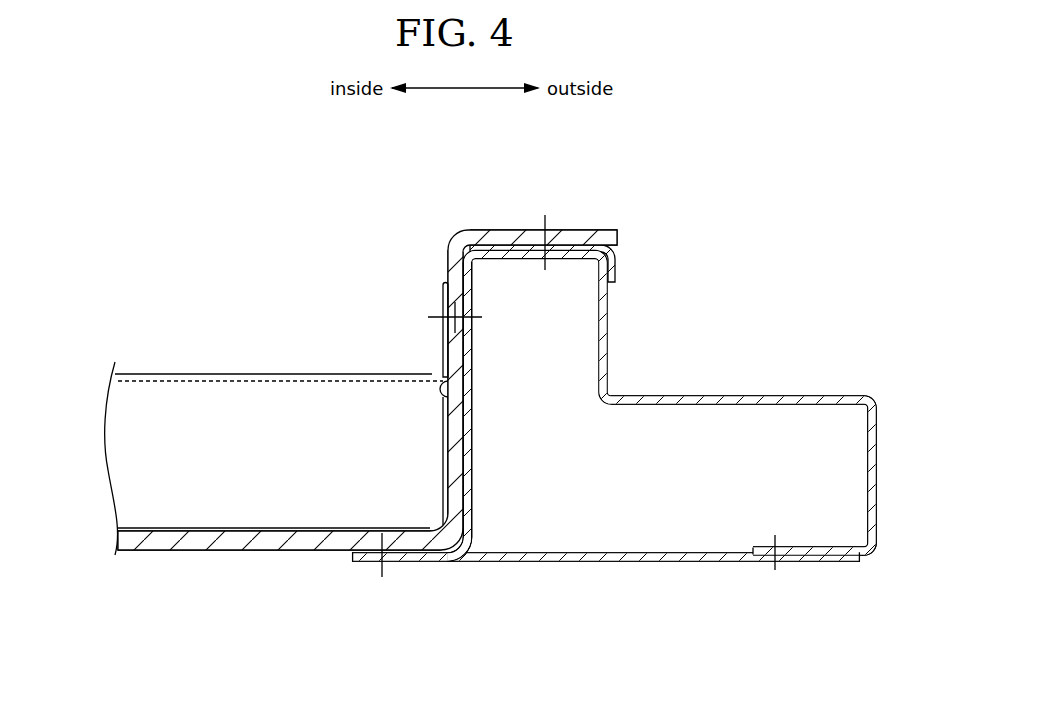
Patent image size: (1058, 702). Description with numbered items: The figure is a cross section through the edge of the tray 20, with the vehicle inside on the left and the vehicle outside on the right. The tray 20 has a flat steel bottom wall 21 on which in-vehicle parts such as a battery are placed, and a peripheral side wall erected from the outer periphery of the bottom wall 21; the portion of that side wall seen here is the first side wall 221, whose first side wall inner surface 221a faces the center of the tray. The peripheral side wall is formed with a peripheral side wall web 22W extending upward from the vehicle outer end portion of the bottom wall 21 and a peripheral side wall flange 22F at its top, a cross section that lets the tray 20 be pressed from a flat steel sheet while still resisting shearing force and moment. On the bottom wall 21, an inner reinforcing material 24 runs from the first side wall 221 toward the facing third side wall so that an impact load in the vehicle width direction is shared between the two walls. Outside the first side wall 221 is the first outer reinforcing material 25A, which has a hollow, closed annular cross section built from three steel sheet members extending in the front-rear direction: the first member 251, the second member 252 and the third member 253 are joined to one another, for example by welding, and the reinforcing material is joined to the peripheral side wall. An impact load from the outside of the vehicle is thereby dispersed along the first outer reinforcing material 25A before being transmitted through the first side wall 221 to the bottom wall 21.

The tray 20 is at (98, 524).
The bottom wall 21 is at (181, 552).
The inner reinforcing material 24 is at (190, 372).
The first side wall 221 is at (452, 231).
The peripheral side wall web 22W is at (447, 264).
The peripheral side wall flange 22F is at (520, 228).
The first side wall inner surface 221a is at (443, 427).
The first member 251 is at (735, 560).
The second member 252 is at (475, 487).
The third member 253 is at (878, 522).
The first outer reinforcing material 25A is at (935, 640).